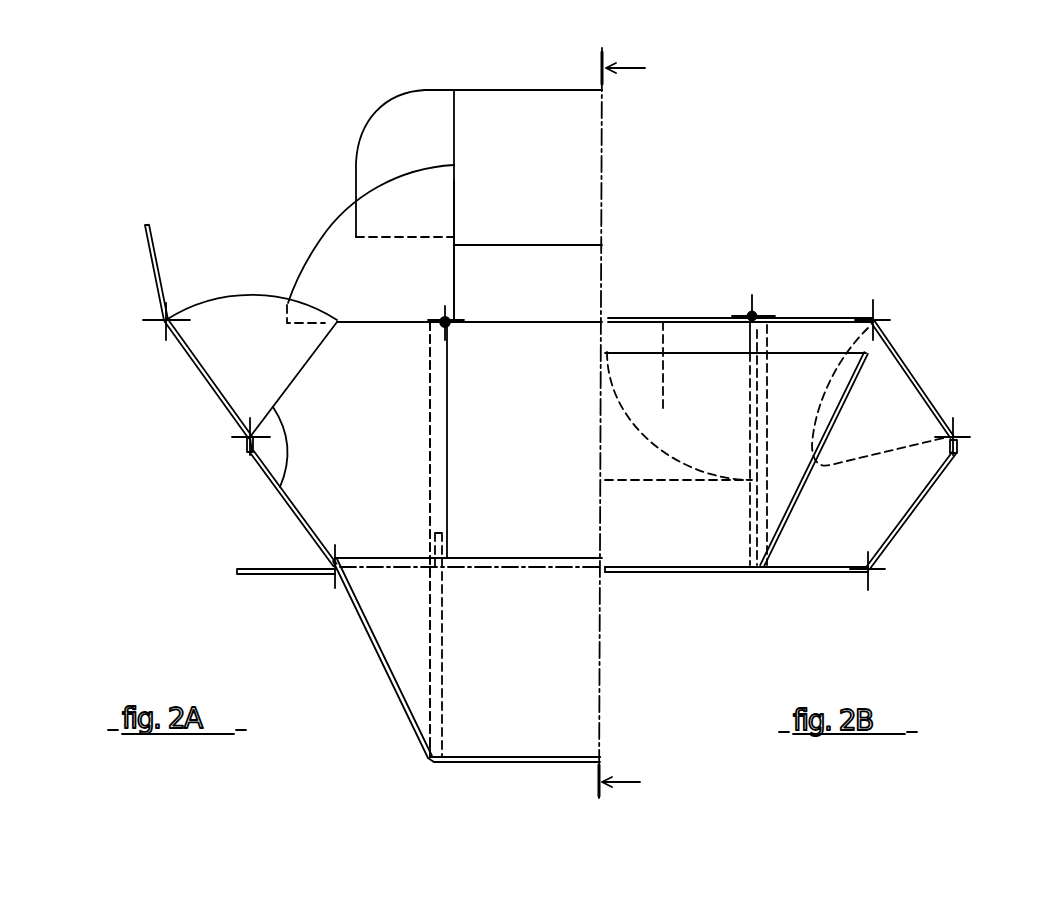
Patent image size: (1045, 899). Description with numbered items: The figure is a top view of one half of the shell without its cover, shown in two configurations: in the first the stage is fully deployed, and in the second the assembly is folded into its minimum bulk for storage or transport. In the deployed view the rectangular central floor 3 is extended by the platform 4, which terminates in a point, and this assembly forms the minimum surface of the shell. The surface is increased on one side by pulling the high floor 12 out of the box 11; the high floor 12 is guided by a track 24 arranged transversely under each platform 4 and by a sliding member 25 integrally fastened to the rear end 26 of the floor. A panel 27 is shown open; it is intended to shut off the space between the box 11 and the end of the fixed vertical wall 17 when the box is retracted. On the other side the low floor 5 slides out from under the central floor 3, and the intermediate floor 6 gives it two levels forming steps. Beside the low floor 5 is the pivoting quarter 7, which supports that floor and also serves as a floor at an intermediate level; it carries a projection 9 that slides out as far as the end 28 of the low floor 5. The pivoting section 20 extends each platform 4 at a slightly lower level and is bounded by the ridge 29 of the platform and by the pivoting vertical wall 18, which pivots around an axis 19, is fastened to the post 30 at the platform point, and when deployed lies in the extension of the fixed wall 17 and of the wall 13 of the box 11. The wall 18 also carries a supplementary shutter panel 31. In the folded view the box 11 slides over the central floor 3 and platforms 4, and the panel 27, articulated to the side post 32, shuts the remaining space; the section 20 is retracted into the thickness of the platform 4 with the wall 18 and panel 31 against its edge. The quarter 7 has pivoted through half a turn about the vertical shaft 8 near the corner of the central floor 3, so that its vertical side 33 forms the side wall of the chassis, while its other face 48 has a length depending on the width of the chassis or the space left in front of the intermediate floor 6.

In FIG. 2A, the central floor 3 is at (548, 449).
In FIG. 2B, the central floor 3 is at (739, 335).
In FIG. 2A, the platform 4 is at (373, 449).
In FIG. 2A, the low floor 5 is at (548, 176).
In FIG. 2A, the intermediate floor 6 is at (548, 297).
In FIG. 2A, the pivoting quarter 7 is at (397, 287).
In FIG. 2A, the vertical shaft 8 is at (445, 322).
In FIG. 2B, the vertical shaft 8 is at (752, 312).
In FIG. 2A, the projection 9 is at (424, 150).
In FIG. 2A, the box 11 is at (466, 780).
In FIG. 2A, the high floor 12 is at (540, 664).
In FIG. 2A, the wall of the box 13 is at (400, 690).
In FIG. 2A, the fixed vertical wall 17 is at (290, 523).
In FIG. 2A, the pivoting vertical wall 18 is at (207, 378).
In FIG. 2A, the axis 19 is at (245, 435).
In FIG. 2A, the pivoting section 20 is at (262, 364).
In FIG. 2B, the pivoting section 20 is at (905, 447).
In FIG. 2A, the track 24 is at (430, 522).
In FIG. 2A, the sliding member 25 is at (432, 632).
In FIG. 2A, the rear end of the high floor 26 is at (432, 742).
In FIG. 2A, the panel 27 is at (262, 575).
In FIG. 2B, the panel 27 is at (828, 578).
In FIG. 2A, the end of the low floor 28 is at (496, 88).
In FIG. 2A, the ridge of the platform 29 is at (283, 487).
In FIG. 2A, the post 30 is at (245, 448).
In FIG. 2B, the post 30 is at (958, 445).
In FIG. 2A, the supplementary shutter panel 31 is at (150, 262).
In FIG. 2B, the supplementary shutter panel 31 is at (825, 318).
In FIG. 2B, the side post 32 is at (870, 571).
In FIG. 2A, the vertical side of the quarter 33 is at (303, 327).
In FIG. 2B, the vertical side of the quarter 33 is at (668, 318).
In FIG. 2A, the face of the quarter 48 is at (454, 218).